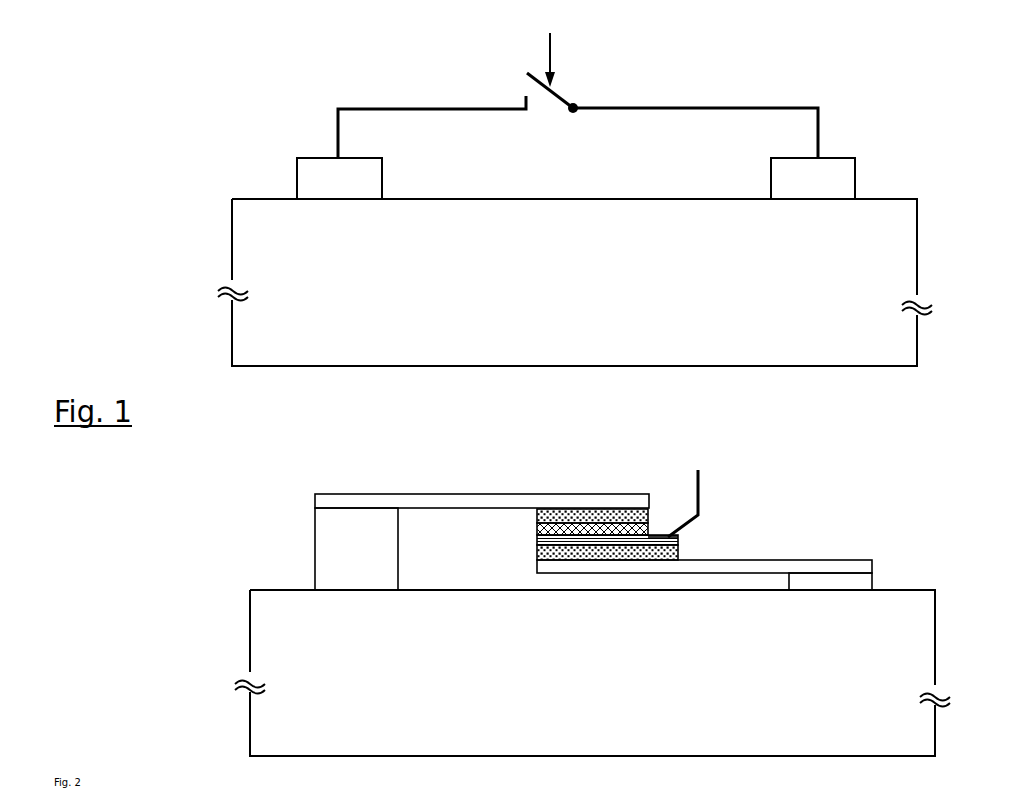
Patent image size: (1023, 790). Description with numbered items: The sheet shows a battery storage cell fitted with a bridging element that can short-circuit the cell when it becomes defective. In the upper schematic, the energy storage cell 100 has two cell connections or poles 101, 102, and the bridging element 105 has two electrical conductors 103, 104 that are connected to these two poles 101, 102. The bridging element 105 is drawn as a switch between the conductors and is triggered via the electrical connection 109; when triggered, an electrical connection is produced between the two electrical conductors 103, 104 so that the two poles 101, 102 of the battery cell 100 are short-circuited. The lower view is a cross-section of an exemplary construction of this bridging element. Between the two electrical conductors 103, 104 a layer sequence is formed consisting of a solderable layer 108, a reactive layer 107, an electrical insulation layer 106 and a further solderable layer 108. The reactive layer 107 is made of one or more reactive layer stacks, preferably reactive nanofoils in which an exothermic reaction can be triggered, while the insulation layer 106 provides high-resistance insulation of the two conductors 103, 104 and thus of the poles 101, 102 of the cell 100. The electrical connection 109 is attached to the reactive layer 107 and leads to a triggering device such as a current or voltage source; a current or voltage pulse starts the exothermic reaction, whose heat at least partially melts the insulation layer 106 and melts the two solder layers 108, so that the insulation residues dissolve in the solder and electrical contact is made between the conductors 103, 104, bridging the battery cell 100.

In FIG. 1, the energy storage cell 100 is at (917, 245).
In FIG. 2, the energy storage cell 100 is at (936, 650).
In FIG. 1, the pole 101 is at (855, 178).
In FIG. 2, the pole 101 is at (872, 585).
In FIG. 1, the pole 102 is at (297, 172).
In FIG. 2, the pole 102 is at (315, 553).
In FIG. 1, the electrical conductor 103 is at (765, 108).
In FIG. 2, the electrical conductor 103 is at (832, 558).
In FIG. 1, the electrical conductor 104 is at (393, 109).
In FIG. 2, the electrical conductor 104 is at (440, 494).
In FIG. 1, the bridging element 105 is at (550, 117).
In FIG. 2, the electrical insulation layer 106 is at (672, 530).
In FIG. 2, the reactive layer 107 is at (678, 539).
In FIG. 2, the solderable layer 108 is at (537, 516).
In FIG. 1, the electrical connection 109 is at (555, 40).
In FIG. 2, the electrical connection 109 is at (705, 475).